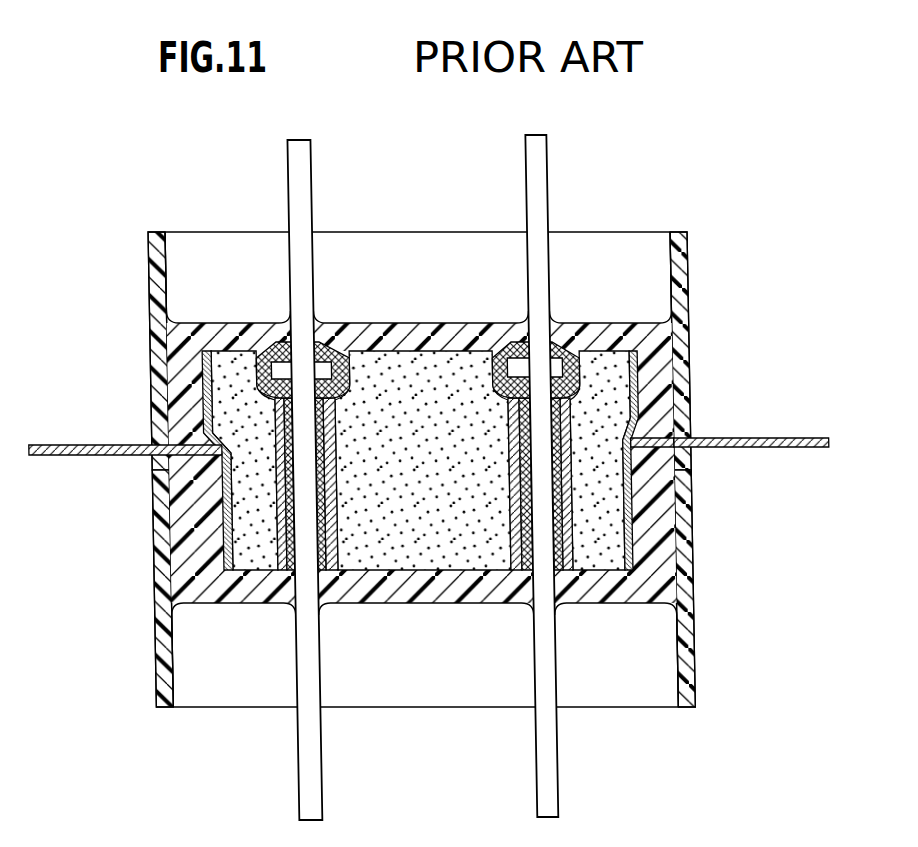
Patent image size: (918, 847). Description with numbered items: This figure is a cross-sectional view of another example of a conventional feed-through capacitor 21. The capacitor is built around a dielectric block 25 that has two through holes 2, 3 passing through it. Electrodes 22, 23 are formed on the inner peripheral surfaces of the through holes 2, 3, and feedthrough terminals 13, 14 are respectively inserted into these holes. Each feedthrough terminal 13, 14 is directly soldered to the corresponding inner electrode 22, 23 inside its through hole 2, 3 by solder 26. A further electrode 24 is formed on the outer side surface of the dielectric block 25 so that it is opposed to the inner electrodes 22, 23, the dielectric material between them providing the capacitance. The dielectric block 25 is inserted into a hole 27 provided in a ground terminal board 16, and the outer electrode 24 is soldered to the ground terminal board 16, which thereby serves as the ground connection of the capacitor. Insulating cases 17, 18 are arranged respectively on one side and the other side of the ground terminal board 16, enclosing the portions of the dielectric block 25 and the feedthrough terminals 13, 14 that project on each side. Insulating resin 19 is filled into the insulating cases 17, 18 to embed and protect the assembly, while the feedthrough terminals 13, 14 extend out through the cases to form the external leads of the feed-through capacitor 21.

The through hole 2 is at (301, 530).
The through hole 3 is at (529, 527).
The feedthrough terminal 13 is at (293, 817).
The feedthrough terminal 14 is at (529, 808).
The ground terminal board 16 is at (87, 444).
The insulating case 17 is at (160, 305).
The insulating case 18 is at (153, 700).
The insulating resin 19 is at (173, 572).
The feed-through capacitor 21 is at (429, 481).
The electrode 22 is at (336, 527).
The electrode 23 is at (569, 527).
The electrode 24 is at (222, 533).
The dielectric block 25 is at (633, 357).
The solder 26 is at (333, 350).
The hole 27 is at (638, 419).